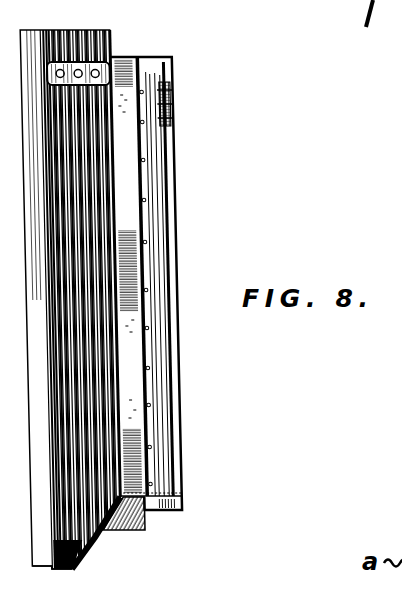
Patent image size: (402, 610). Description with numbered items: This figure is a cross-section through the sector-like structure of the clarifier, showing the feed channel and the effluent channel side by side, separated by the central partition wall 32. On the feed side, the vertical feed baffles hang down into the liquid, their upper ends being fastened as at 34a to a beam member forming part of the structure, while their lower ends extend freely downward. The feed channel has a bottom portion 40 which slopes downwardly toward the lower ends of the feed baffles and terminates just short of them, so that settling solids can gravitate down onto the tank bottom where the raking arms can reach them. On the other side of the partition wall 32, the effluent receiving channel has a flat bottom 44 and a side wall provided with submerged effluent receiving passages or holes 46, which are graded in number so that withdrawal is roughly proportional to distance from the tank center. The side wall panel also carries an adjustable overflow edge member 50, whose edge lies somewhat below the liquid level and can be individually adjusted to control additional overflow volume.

The fastening of feed baffles 34a is at (101, 59).
The adjustable overflow edge member 50 is at (170, 96).
The effluent receiving passages or holes 46 is at (167, 193).
The central partition wall 32 is at (132, 387).
The flat bottom 44 is at (160, 493).
The bottom portion 40 is at (103, 537).